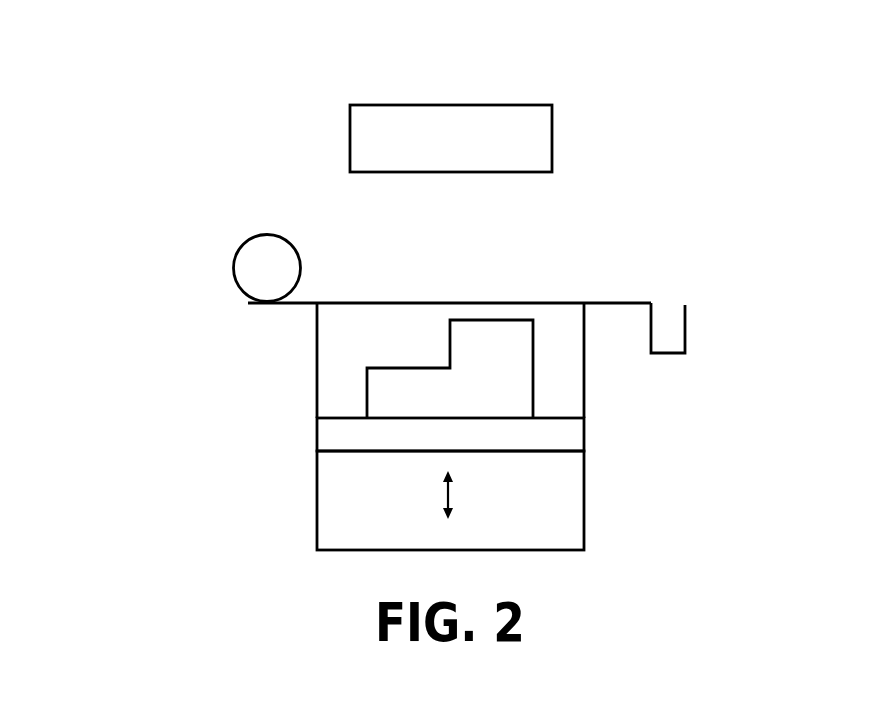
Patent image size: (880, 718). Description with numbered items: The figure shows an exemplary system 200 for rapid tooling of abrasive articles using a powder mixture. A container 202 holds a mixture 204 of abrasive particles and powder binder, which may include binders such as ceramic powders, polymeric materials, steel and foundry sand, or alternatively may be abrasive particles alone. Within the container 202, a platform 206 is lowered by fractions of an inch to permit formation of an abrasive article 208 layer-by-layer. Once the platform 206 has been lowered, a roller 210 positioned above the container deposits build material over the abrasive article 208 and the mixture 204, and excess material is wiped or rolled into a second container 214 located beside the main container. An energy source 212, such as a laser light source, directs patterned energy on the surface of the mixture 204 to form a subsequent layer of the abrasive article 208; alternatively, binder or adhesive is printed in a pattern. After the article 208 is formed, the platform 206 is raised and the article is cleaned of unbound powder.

The system 200 is at (156, 80).
The container 202 is at (317, 383).
The mixture 204 is at (333, 518).
The platform 206 is at (317, 435).
The abrasive article 208 is at (367, 400).
The roller 210 is at (267, 234).
The energy source 212 is at (350, 138).
The container 214 is at (668, 324).